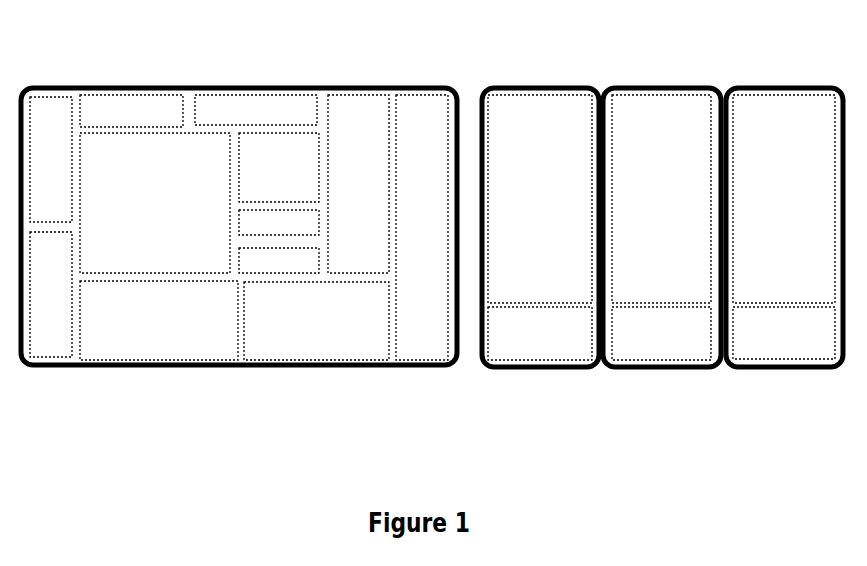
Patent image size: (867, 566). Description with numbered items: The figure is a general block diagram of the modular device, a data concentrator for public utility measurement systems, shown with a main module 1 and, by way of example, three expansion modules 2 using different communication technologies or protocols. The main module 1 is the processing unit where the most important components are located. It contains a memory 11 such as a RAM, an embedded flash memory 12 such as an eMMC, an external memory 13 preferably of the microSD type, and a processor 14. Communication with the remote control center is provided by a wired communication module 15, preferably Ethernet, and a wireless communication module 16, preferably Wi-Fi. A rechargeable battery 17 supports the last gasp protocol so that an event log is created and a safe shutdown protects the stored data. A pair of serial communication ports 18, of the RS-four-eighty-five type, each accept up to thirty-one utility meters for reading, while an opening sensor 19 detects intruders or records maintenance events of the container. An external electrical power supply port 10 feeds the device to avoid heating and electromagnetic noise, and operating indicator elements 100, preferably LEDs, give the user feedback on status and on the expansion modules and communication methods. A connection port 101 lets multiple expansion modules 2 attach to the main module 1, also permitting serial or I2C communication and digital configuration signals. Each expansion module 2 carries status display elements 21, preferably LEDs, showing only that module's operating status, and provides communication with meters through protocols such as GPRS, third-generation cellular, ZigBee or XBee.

The main module 1 is at (172, 87).
The expansion module 2 is at (662, 227).
The external electrical power supply port 10 is at (51, 159).
The memory 11 is at (279, 167).
The embedded flash memory 12 is at (279, 222).
The external memory 13 is at (279, 260).
The processor 14 is at (155, 203).
The wired communication module 15 is at (159, 320).
The wireless communication module 16 is at (51, 294).
The battery 17 is at (358, 184).
The serial communication ports 18 is at (131, 111).
The opening sensor 19 is at (256, 110).
The status display elements 21 is at (661, 333).
The operating indicator elements 100 is at (316, 321).
The connection port with expansion modules 101 is at (422, 227).